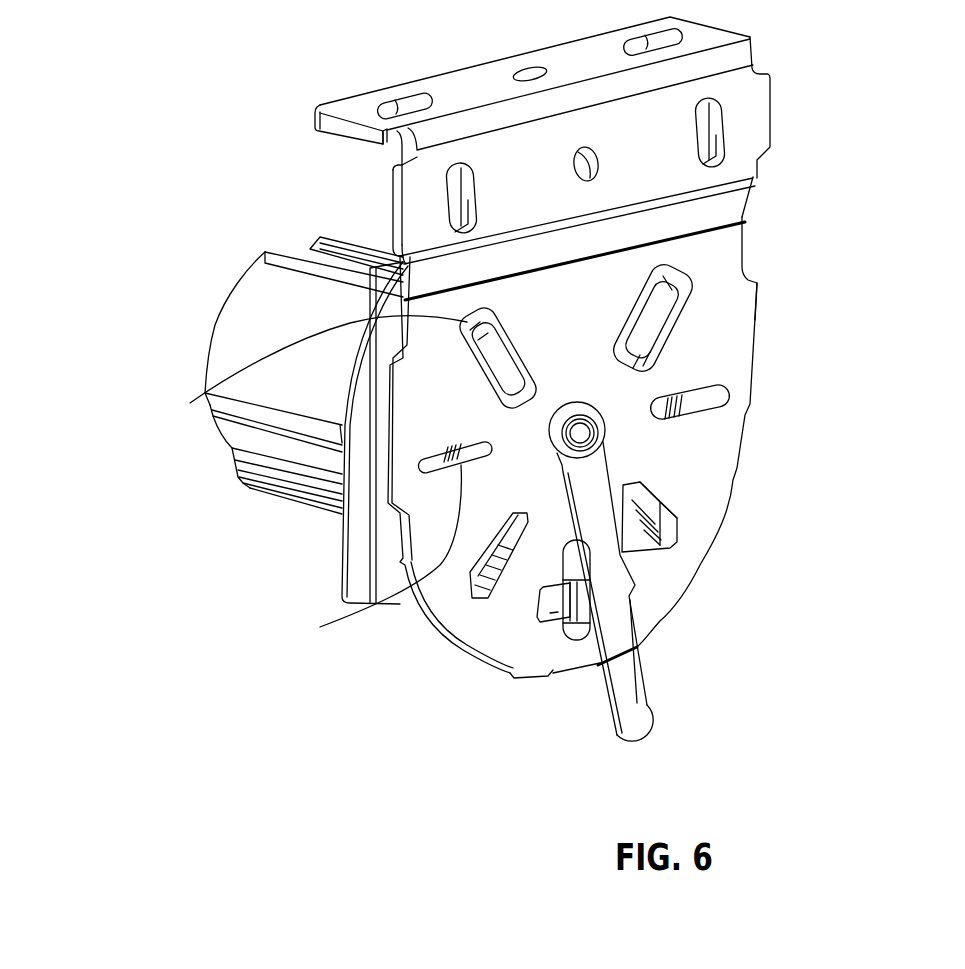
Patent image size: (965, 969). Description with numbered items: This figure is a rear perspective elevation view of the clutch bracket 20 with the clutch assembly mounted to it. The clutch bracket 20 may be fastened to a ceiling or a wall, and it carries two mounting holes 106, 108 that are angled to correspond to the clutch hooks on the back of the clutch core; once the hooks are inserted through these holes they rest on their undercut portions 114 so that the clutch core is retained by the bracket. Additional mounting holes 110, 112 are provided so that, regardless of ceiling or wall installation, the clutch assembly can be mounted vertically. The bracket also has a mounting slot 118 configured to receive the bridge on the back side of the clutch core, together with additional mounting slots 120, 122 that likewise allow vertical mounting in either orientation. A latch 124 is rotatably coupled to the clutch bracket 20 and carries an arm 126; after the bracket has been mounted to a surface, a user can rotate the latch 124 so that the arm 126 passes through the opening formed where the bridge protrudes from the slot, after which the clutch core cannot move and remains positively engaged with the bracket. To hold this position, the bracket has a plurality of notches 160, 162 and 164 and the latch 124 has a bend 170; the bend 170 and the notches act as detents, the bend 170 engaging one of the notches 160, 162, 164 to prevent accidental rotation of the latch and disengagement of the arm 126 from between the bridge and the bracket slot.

The clutch bracket 20 is at (740, 130).
The mounting hole 106 is at (207, 393).
The mounting hole 108 is at (680, 268).
The additional mounting hole 110 is at (470, 575).
The additional mounting hole 112 is at (680, 530).
The undercut portion 114 is at (630, 380).
The mounting slot 118 is at (560, 557).
The additional mounting slot 120 is at (405, 603).
The additional mounting slot 122 is at (703, 398).
The latch 124 is at (617, 626).
The arm 126 is at (512, 640).
The notch 160 is at (400, 561).
The notch 162 is at (530, 672).
The notch 164 is at (740, 463).
The bend 170 is at (605, 668).